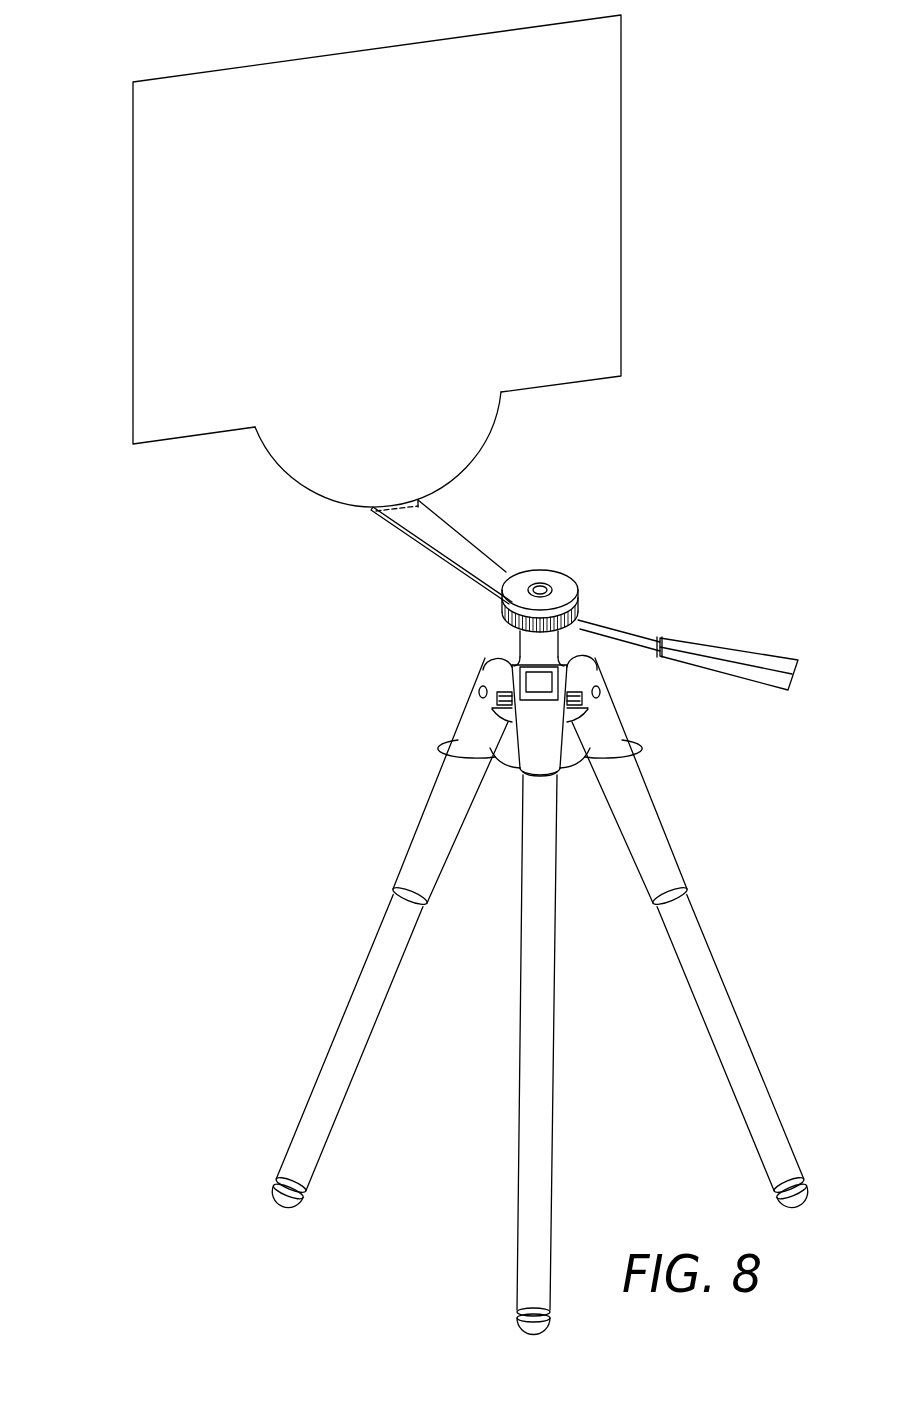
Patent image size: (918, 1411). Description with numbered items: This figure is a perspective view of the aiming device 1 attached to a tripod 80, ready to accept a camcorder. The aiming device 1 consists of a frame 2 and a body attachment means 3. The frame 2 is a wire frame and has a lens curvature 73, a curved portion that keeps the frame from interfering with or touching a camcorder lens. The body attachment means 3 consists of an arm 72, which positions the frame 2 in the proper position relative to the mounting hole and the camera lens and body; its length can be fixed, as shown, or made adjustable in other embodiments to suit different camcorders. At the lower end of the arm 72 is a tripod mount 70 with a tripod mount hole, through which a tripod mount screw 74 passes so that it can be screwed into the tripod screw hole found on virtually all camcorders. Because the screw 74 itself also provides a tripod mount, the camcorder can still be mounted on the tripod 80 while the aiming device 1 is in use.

The aiming device 1 is at (621, 143).
The frame 2 is at (109, 229).
The body attachment means 3 is at (445, 567).
The tripod mount 70 is at (510, 627).
The arm 72 is at (424, 532).
The lens curvature 73 is at (283, 472).
The tripod mount screw 74 is at (574, 606).
The tripod 80 is at (430, 808).